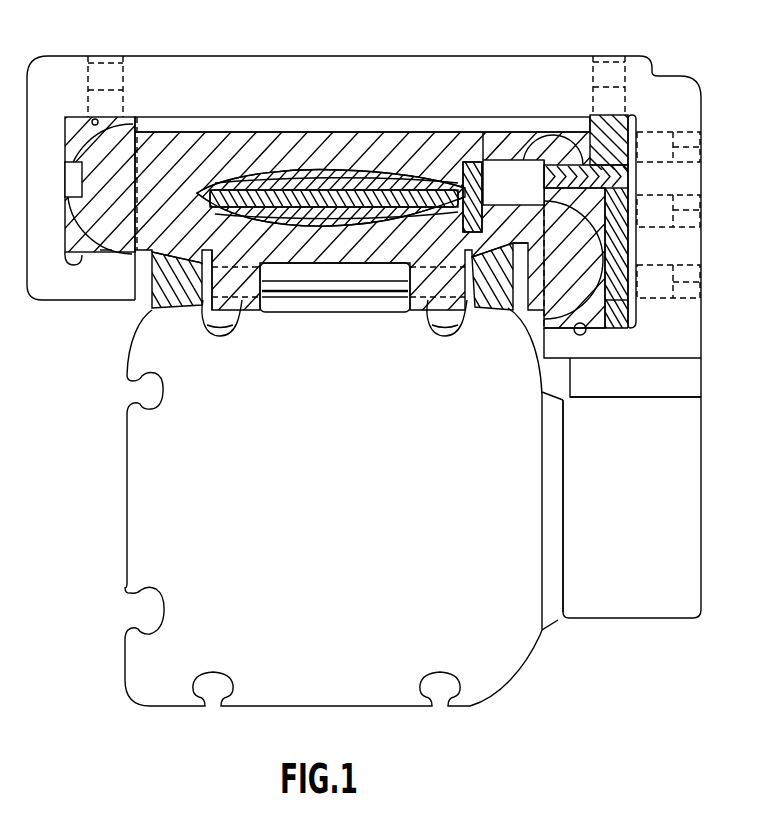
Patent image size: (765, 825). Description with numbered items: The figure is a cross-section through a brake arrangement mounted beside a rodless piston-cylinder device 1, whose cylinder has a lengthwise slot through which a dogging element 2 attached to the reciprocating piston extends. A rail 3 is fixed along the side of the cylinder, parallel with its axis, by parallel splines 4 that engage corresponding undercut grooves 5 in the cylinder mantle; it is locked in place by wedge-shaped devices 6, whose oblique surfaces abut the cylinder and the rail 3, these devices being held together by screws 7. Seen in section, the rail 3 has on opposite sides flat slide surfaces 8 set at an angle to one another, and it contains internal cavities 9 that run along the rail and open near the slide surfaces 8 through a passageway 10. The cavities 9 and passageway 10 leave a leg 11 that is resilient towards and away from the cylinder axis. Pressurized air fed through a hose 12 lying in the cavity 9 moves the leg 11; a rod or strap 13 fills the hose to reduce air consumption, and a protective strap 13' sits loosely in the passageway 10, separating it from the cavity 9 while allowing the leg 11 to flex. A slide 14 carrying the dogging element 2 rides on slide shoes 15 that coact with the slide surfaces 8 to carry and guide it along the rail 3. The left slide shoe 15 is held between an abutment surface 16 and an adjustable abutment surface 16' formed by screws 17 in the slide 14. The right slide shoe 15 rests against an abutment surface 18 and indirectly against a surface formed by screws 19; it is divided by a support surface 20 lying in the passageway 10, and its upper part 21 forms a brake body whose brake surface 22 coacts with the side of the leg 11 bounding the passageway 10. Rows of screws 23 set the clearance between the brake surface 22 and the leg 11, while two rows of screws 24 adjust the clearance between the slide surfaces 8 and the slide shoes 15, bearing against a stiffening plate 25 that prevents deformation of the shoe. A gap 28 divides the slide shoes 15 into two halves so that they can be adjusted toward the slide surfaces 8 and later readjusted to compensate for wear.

The piston-cylinder device 1 is at (153, 672).
The dogging element 2 is at (635, 602).
The rail 3 is at (178, 135).
The splines 4 is at (240, 322).
The undercut grooves 5 is at (234, 337).
The wedge-shaped devices 6 is at (150, 302).
The screws 7 is at (330, 288).
The slide surfaces 8 is at (607, 326).
The internal cavities 9 is at (310, 185).
The passageway 10 is at (528, 172).
The leg 11 is at (413, 150).
The hose 12 is at (277, 178).
The rod or strap 13 is at (331, 154).
The protective strap 13' is at (503, 196).
The slide 14 is at (155, 65).
The slide shoes 15 is at (73, 227).
The abutment surface 16 is at (57, 272).
The abutment surface 16' is at (67, 101).
The screws 17 is at (105, 56).
The abutment surface 18 is at (628, 117).
The screws 19 is at (607, 52).
The support surface 20 is at (630, 182).
The brake body 21 is at (628, 142).
The brake surface 22 is at (560, 140).
The screws 23 is at (700, 140).
The screws 24 is at (700, 202).
The stiffening plate 25 is at (635, 320).
The gap 28 is at (73, 163).